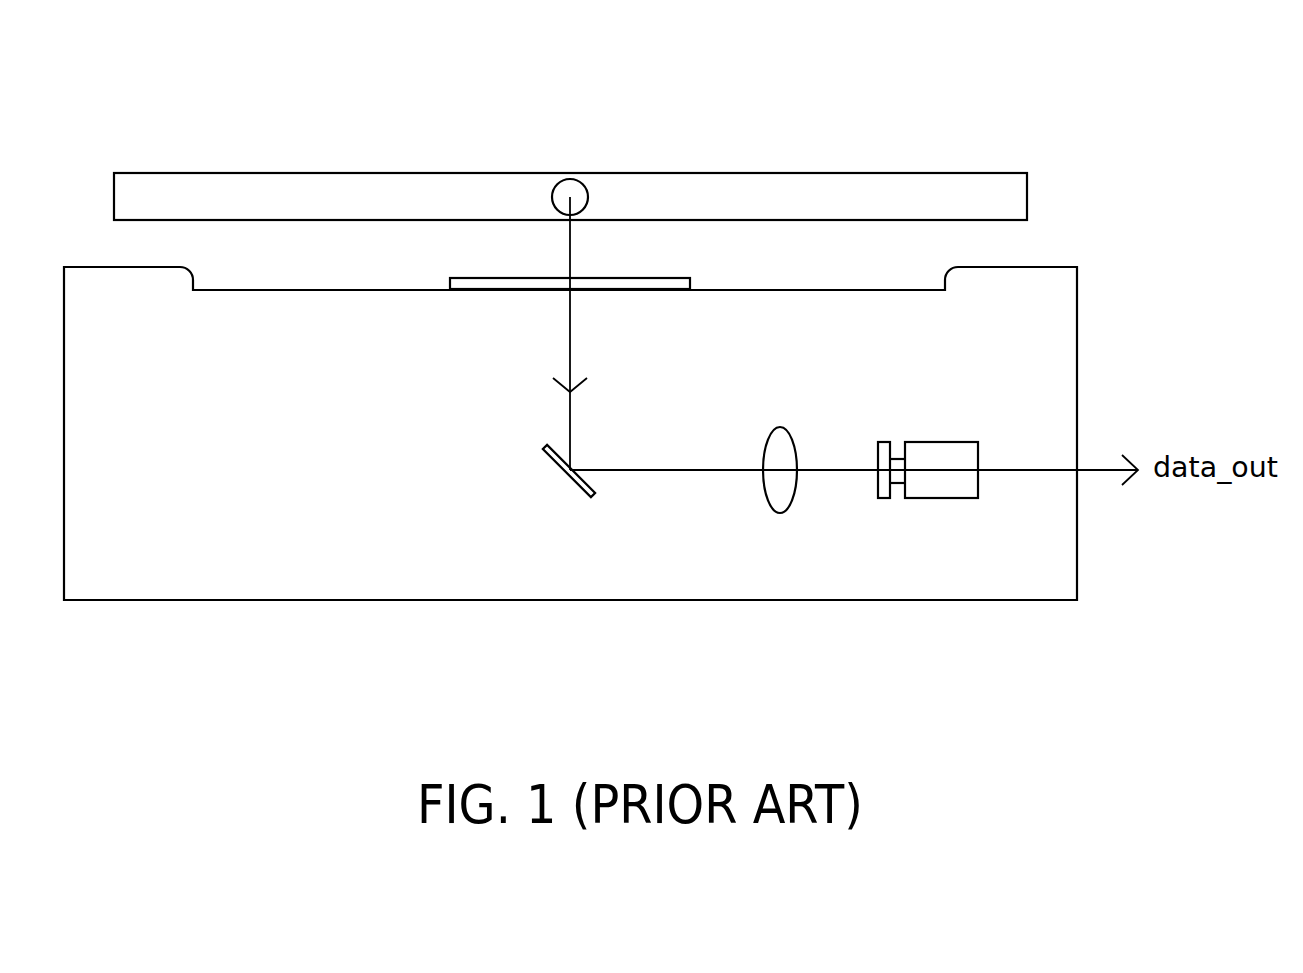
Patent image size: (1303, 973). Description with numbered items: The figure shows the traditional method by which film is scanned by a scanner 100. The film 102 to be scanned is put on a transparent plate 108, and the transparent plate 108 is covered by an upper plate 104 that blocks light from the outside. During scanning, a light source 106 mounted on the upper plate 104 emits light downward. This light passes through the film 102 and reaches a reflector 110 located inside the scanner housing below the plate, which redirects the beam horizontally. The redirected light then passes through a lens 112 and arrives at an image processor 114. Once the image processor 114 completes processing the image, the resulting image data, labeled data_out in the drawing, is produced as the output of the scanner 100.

The scanner 100 is at (1142, 52).
The film 102 is at (632, 278).
The upper plate 104 is at (863, 173).
The light source 106 is at (584, 182).
The transparent plate 108 is at (812, 290).
The reflector 110 is at (545, 458).
The lens 112 is at (790, 500).
The image processor 114 is at (940, 498).